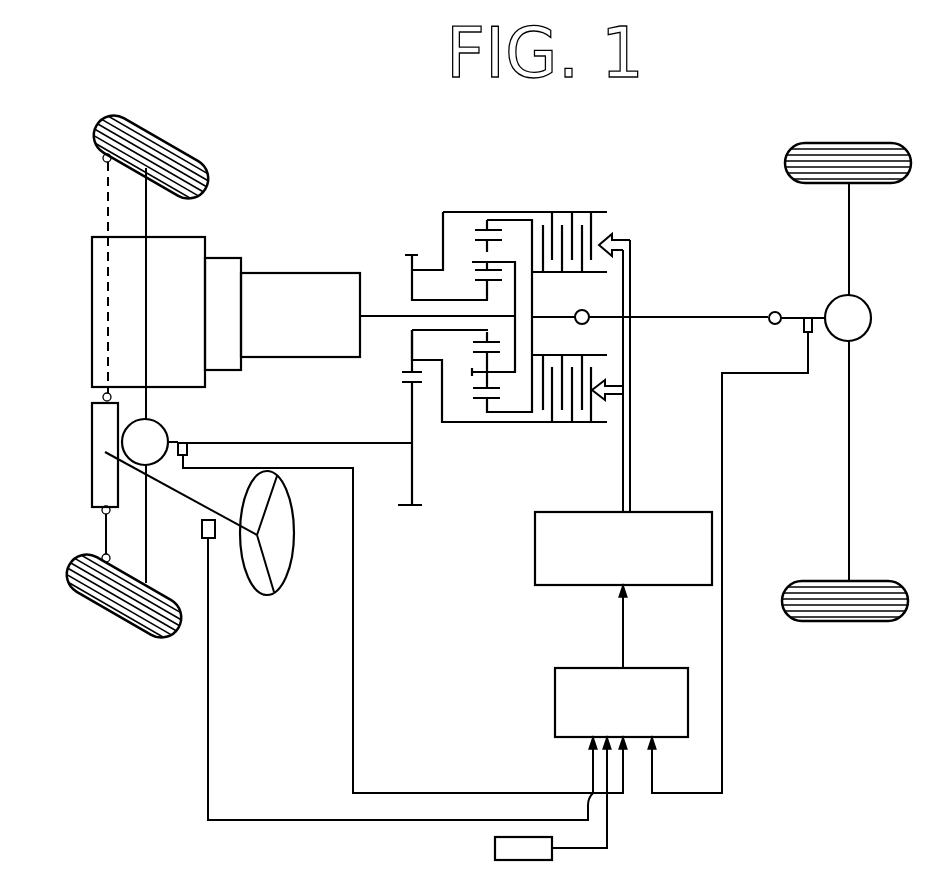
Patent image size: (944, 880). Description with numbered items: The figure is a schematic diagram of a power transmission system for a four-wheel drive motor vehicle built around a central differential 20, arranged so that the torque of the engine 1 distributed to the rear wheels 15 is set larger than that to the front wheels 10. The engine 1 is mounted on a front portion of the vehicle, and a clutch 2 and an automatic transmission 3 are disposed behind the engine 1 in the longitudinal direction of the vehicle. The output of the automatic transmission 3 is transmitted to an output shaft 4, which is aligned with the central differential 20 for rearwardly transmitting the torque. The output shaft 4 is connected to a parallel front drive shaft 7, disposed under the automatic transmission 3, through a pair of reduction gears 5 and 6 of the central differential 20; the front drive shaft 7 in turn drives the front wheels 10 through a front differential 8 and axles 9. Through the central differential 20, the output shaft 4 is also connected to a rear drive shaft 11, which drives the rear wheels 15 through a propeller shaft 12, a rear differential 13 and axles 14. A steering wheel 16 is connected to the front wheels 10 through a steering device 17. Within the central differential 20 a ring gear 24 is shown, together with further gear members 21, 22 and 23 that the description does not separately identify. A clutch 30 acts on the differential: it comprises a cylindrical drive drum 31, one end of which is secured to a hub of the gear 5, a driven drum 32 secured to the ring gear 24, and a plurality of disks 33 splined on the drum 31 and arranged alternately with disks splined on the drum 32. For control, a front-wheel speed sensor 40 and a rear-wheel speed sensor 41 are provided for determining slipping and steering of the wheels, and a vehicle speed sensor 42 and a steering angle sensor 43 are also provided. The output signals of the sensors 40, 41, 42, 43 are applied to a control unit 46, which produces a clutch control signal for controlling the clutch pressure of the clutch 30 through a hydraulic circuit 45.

The engine 1 is at (92, 308).
The clutch 2 is at (213, 324).
The automatic transmission 3 is at (288, 334).
The output shaft 4 is at (397, 317).
The reduction gear 5 is at (420, 253).
The reduction gear 6 is at (405, 510).
The front drive shaft 7 is at (290, 441).
The front differential 8 is at (125, 432).
The axles 9 is at (145, 548).
The front wheels 10 is at (100, 592).
The rear drive shaft 11 is at (567, 322).
The propeller shaft 12 is at (668, 316).
The rear differential 13 is at (872, 318).
The axles 14 is at (850, 500).
The rear wheels 15 is at (885, 620).
The steering wheel 16 is at (295, 562).
The steering device 17 is at (92, 490).
The central differential 20 is at (527, 424).
The sun gear 21 is at (477, 243).
The ring gear 22 is at (470, 260).
The pinion carrier 23 is at (473, 288).
The ring gear 24 is at (478, 230).
The clutch 30 is at (583, 200).
The drive drum 31 is at (541, 211).
The driven drum 32 is at (573, 274).
The disks 33 is at (596, 218).
The front-wheel speed sensor 40 is at (183, 440).
The rear-wheel speed sensor 41 is at (802, 323).
The vehicle speed sensor 42 is at (495, 848).
The steering angle sensor 43 is at (202, 528).
The hydraulic circuit 45 is at (535, 567).
The control unit 46 is at (555, 707).